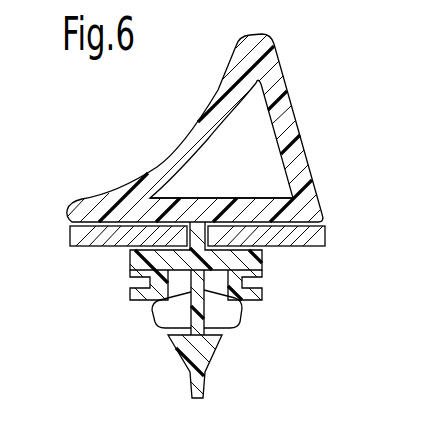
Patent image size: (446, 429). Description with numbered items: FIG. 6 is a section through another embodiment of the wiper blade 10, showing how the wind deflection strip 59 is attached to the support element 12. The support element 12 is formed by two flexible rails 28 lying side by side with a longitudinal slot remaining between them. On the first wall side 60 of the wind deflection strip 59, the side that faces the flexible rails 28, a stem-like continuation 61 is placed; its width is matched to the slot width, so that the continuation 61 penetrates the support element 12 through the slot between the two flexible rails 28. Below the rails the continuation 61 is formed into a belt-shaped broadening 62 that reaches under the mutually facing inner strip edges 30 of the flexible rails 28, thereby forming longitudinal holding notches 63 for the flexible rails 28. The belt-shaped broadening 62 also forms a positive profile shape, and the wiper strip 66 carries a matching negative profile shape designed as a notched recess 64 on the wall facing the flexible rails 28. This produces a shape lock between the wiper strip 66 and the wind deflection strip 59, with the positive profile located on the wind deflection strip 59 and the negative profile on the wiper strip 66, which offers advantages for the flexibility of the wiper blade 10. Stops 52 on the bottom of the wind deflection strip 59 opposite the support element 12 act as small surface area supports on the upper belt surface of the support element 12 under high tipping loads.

The fastening arrangement 10 is at (201, 222).
The support element 12 is at (94, 279).
The flexible rails 28 is at (100, 243).
The inner strip edges 30 is at (230, 203).
The stops 52 is at (327, 225).
The wind deflection strip 59 is at (326, 184).
The first wall side 60 is at (208, 316).
The stem-like continuation 61 is at (192, 212).
The belt-shaped broadening 62 is at (178, 262).
The longitudinal holding notches 63 is at (125, 252).
The notched recess 64 is at (176, 328).
The wiper strip 66 is at (237, 328).